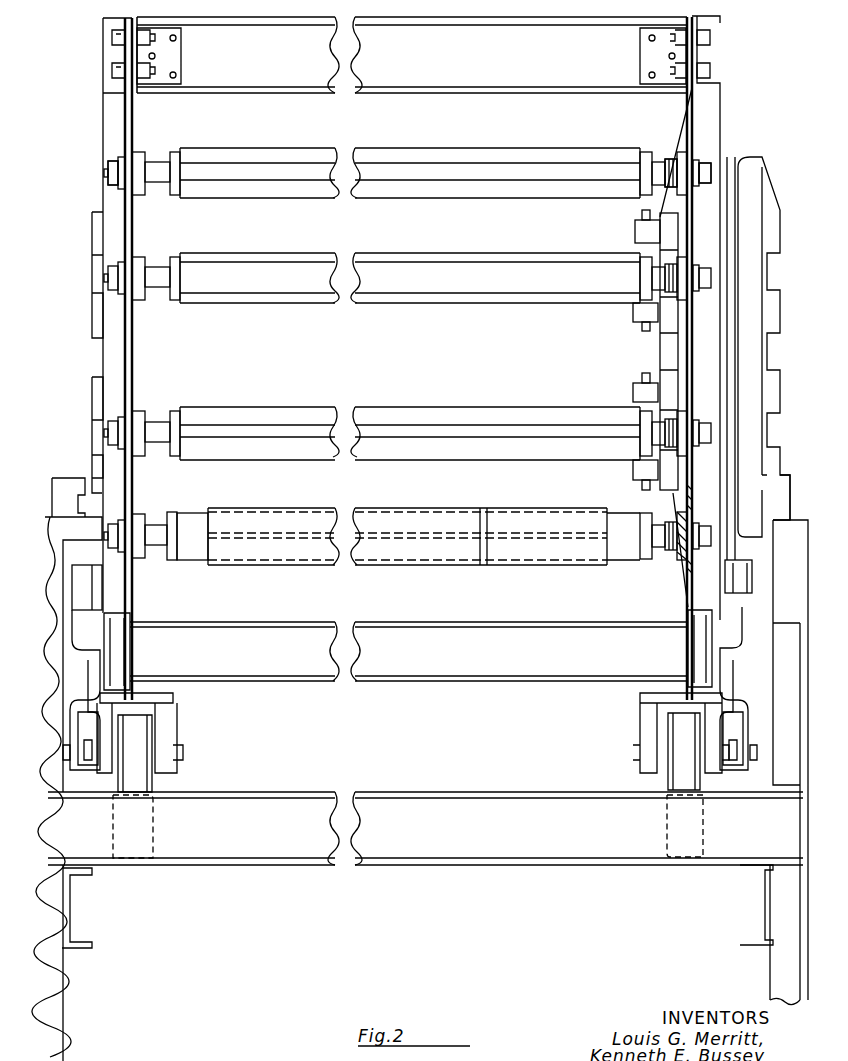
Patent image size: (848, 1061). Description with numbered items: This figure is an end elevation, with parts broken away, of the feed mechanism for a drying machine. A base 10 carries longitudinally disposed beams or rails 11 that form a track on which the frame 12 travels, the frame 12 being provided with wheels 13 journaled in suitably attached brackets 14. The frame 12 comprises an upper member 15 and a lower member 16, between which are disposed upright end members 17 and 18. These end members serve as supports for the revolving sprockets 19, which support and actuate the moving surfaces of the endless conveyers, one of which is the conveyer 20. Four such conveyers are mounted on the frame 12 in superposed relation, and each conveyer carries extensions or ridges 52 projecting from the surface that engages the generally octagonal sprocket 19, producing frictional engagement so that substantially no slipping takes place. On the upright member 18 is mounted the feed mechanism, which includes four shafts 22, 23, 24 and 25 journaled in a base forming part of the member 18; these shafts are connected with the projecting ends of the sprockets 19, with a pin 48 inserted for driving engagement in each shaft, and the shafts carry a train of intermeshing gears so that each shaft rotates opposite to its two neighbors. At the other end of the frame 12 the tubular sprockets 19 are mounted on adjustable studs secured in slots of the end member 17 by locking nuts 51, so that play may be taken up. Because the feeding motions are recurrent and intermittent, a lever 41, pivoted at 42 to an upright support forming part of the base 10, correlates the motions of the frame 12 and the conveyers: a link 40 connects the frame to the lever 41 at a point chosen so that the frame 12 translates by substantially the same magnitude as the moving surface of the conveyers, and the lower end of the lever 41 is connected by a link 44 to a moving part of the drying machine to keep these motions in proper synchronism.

The base 10 is at (74, 932).
The beams or rails 11 is at (153, 842).
The frame 12 is at (409, 651).
The wheels 13 is at (128, 778).
The brackets 14 is at (169, 712).
The upper member 15 is at (122, 60).
The lower member 16 is at (128, 624).
The upright end member 17 is at (133, 342).
The upright end member 18 is at (720, 140).
The sprockets 19 is at (173, 152).
The endless conveyer 20 is at (410, 508).
The shaft 22 is at (635, 225).
The shaft 23 is at (633, 312).
The shaft 24 is at (633, 391).
The shaft 25 is at (633, 466).
The link 40 is at (88, 593).
The lever 41 is at (92, 680).
The pivot 42 is at (76, 492).
The link 44 is at (88, 768).
The pin 48 is at (642, 233).
The locking nuts 51 is at (115, 165).
The extensions or ridges 52 is at (254, 525).